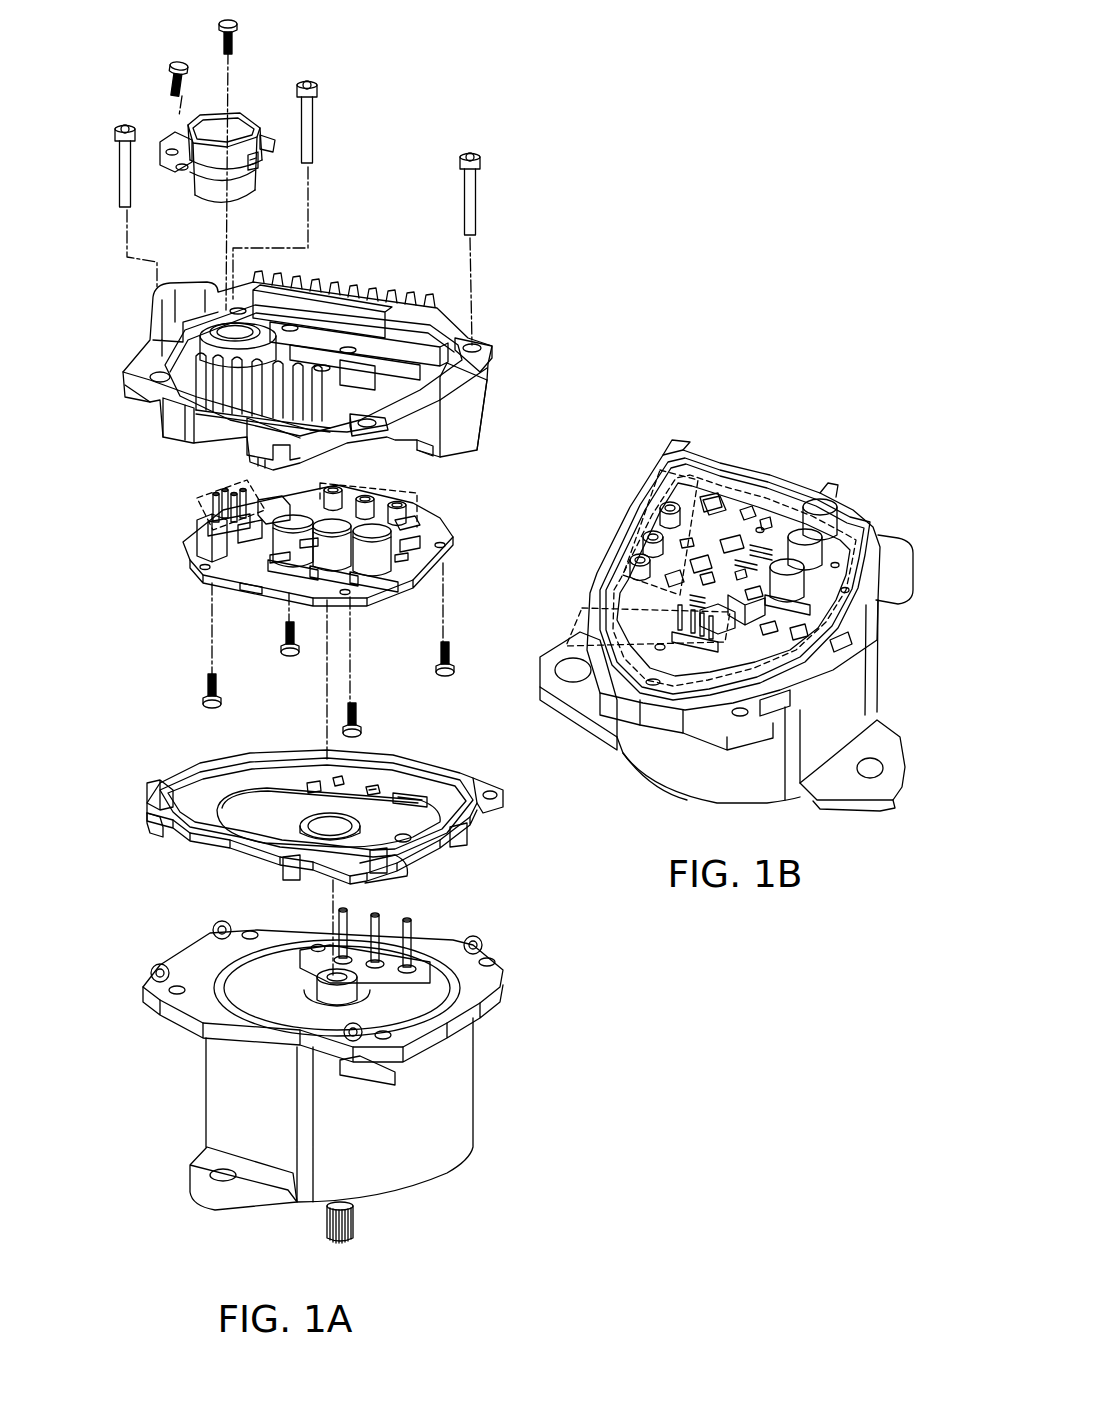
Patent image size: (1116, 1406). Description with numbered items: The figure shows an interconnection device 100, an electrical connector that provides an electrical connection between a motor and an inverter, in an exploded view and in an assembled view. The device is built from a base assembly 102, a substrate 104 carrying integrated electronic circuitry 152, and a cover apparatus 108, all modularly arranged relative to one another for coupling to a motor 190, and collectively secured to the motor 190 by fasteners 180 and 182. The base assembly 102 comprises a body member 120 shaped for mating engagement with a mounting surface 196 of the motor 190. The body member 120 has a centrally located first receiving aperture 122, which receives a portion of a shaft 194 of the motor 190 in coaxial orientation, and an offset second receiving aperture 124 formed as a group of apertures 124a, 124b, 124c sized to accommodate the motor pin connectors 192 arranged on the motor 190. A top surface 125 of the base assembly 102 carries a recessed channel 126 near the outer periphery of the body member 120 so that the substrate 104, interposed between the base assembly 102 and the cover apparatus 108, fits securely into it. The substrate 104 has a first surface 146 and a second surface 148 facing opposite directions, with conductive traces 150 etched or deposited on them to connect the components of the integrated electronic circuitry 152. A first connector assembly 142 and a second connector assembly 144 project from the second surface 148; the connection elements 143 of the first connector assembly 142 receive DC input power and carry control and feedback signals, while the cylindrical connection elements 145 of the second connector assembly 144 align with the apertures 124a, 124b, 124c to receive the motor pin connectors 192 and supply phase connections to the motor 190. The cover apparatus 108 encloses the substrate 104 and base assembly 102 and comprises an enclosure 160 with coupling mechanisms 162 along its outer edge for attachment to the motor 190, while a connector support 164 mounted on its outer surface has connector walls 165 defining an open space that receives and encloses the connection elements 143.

In FIG. 1A, the interconnection device 100 is at (90, 70).
In FIG. 1B, the interconnection device 100 is at (833, 451).
In FIG. 1B, the base assembly 102 is at (630, 560).
In FIG. 1A, the substrate 104 is at (366, 601).
In FIG. 1B, the substrate 104 is at (777, 496).
In FIG. 1A, the cover apparatus 108 is at (338, 263).
In FIG. 1A, the body member 120 is at (488, 820).
In FIG. 1A, the first receiving aperture 122 is at (270, 817).
In FIG. 1A, the second receiving aperture 124 is at (262, 678).
In FIG. 1A, the aperture 124a is at (337, 782).
In FIG. 1A, the aperture 124b is at (370, 790).
In FIG. 1A, the aperture 124c is at (403, 797).
In FIG. 1A, the top surface 125 is at (150, 792).
In FIG. 1A, the recessed channel 126 is at (187, 775).
In FIG. 1A, the first connector assembly 142 is at (185, 500).
In FIG. 1B, the first connector assembly 142 is at (610, 603).
In FIG. 1B, the connection elements 143 is at (716, 604).
In FIG. 1A, the second connector assembly 144 is at (418, 500).
In FIG. 1B, the second connector assembly 144 is at (660, 470).
In FIG. 1B, the connection elements 145 is at (667, 505).
In FIG. 1A, the first surface 146 is at (203, 580).
In FIG. 1B, the first surface 146 is at (720, 493).
In FIG. 1A, the second surface 148 is at (250, 590).
In FIG. 1A, the conductive traces 150 is at (447, 548).
In FIG. 1B, the integrated electronic circuitry 152 is at (853, 497).
In FIG. 1A, the enclosure 160 is at (405, 318).
In FIG. 1A, the coupling mechanisms 162 is at (470, 408).
In FIG. 1A, the connector support 164 is at (250, 106).
In FIG. 1A, the connector walls 165 is at (210, 152).
In FIG. 1A, the fasteners 180 is at (178, 64).
In FIG. 1A, the fasteners 182 is at (315, 122).
In FIG. 1A, the motor 190 is at (247, 1090).
In FIG. 1B, the motor 190 is at (843, 690).
In FIG. 1A, the motor pin connectors 192 is at (428, 910).
In FIG. 1A, the shaft 194 is at (327, 990).
In FIG. 1A, the mounting surface 196 is at (193, 980).